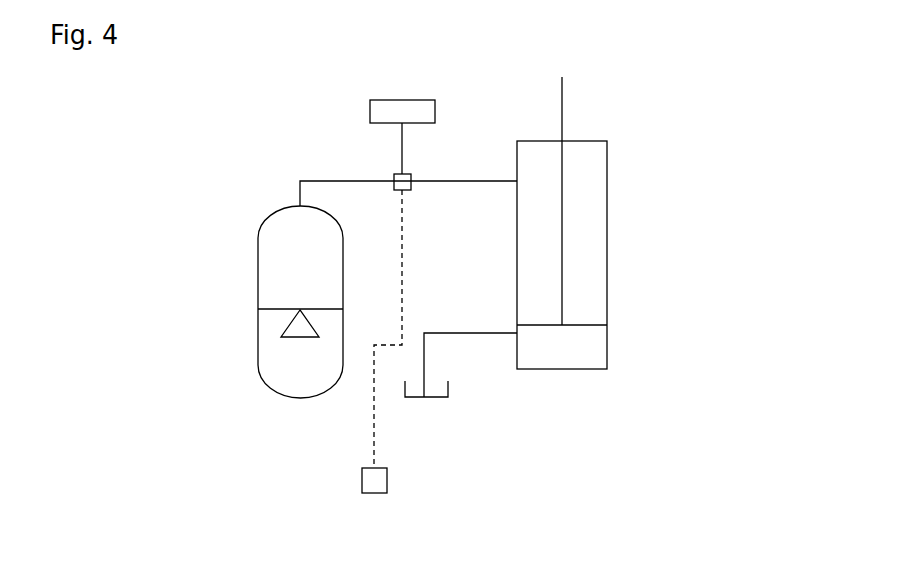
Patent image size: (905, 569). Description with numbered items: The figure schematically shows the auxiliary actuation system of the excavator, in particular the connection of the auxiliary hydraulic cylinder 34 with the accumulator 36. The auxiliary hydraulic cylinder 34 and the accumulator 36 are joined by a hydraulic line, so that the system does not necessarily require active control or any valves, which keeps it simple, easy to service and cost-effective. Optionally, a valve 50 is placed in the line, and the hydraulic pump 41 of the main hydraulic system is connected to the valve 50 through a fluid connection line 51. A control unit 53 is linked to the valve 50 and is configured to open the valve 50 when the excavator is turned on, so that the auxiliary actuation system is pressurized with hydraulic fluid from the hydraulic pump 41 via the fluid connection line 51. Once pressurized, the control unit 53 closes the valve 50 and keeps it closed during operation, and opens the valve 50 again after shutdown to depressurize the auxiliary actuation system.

The auxiliary hydraulic cylinder 34 is at (607, 250).
The accumulator 36 is at (258, 322).
The hydraulic pump 41 is at (397, 100).
The valve 50 is at (394, 176).
The fluid connection line 51 is at (403, 152).
The control unit 53 is at (388, 480).